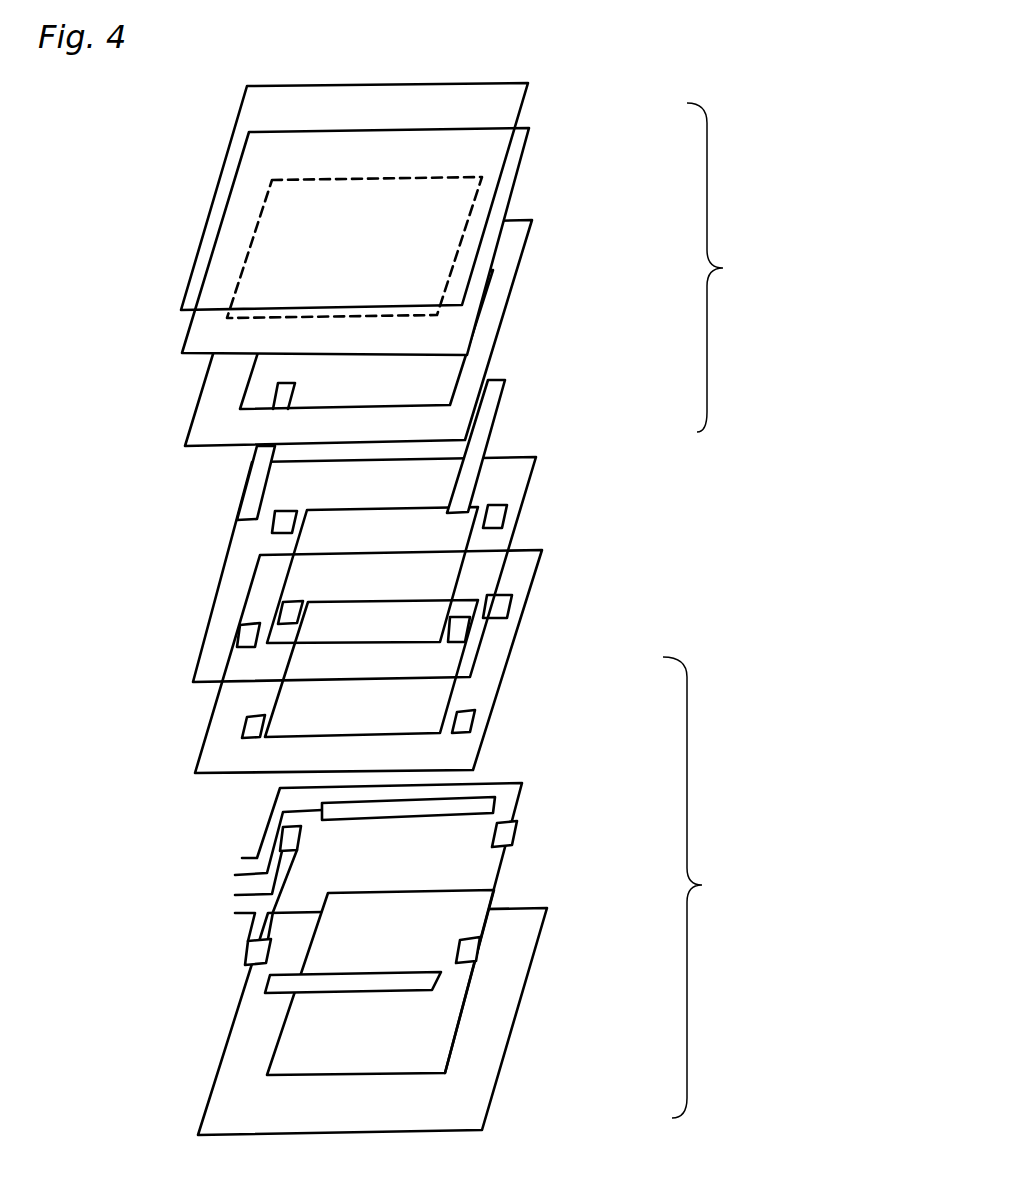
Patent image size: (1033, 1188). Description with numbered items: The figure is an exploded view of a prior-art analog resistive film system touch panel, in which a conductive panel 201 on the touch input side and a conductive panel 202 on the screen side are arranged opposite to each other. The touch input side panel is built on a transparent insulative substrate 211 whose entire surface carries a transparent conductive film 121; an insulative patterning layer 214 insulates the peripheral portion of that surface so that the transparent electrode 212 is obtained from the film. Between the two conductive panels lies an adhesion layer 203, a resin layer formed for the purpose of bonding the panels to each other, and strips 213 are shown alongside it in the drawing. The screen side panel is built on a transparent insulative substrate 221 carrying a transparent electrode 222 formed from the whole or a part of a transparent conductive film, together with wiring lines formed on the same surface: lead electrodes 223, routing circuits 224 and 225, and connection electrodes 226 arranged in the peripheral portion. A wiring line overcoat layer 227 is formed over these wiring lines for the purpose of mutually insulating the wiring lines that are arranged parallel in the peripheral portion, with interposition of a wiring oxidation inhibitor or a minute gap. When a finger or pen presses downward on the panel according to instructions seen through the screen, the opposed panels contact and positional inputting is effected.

The transparent conductive film 121 is at (238, 165).
The conductive panel 201 is at (737, 267).
The conductive panel 202 is at (714, 887).
The adhesion layer 203 is at (527, 503).
The transparent insulative substrate 211 is at (528, 95).
The transparent electrode 212 is at (455, 203).
The spacer strips 213 is at (252, 488).
The insulative patterning layer 214 is at (505, 283).
The transparent insulative substrate 221 is at (492, 1093).
The transparent electrode 222 is at (448, 1023).
The lead electrodes 223 is at (453, 807).
The routing circuits 224 is at (262, 823).
The routing circuits 225 is at (517, 807).
The connection electrodes 226 is at (478, 952).
The wiring line overcoat layer 227 is at (488, 670).